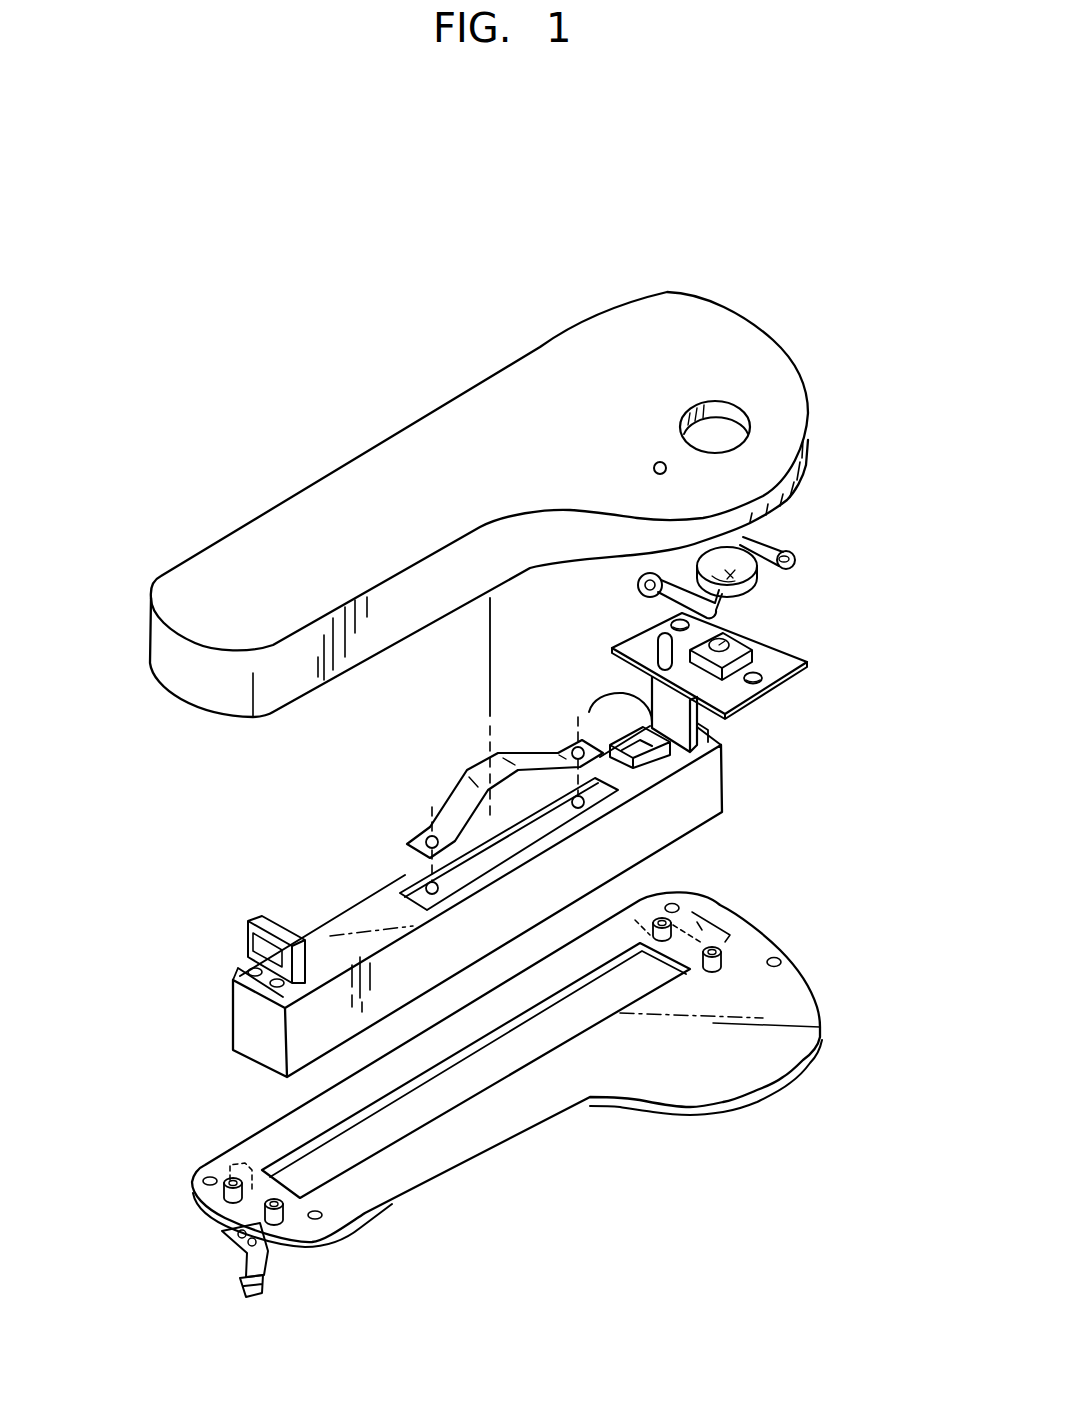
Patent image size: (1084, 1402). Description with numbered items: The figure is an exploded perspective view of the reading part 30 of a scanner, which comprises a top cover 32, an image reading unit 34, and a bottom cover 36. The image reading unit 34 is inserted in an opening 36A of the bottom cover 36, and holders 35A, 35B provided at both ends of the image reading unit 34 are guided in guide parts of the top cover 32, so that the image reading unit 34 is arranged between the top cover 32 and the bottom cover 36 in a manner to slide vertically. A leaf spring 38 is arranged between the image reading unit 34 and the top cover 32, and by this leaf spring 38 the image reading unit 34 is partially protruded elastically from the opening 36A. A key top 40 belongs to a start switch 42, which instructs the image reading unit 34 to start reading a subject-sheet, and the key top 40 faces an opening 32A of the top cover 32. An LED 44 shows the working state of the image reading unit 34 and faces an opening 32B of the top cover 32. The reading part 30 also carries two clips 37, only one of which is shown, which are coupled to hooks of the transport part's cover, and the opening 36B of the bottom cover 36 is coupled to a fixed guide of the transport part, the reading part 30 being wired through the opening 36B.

The reading part 30 is at (861, 229).
The top cover 32 is at (626, 318).
The opening 32A is at (737, 417).
The opening 32B is at (652, 469).
The image reading unit 34 is at (739, 789).
The holder 35A is at (250, 945).
The holder 35B is at (650, 677).
The bottom cover 36 is at (514, 1059).
The opening 36A is at (452, 1090).
The opening 36B is at (712, 913).
The clip 37 is at (256, 1296).
The leaf spring 38 is at (528, 758).
The key top 40 is at (757, 588).
The start switch 42 is at (738, 631).
The LED 44 is at (645, 634).